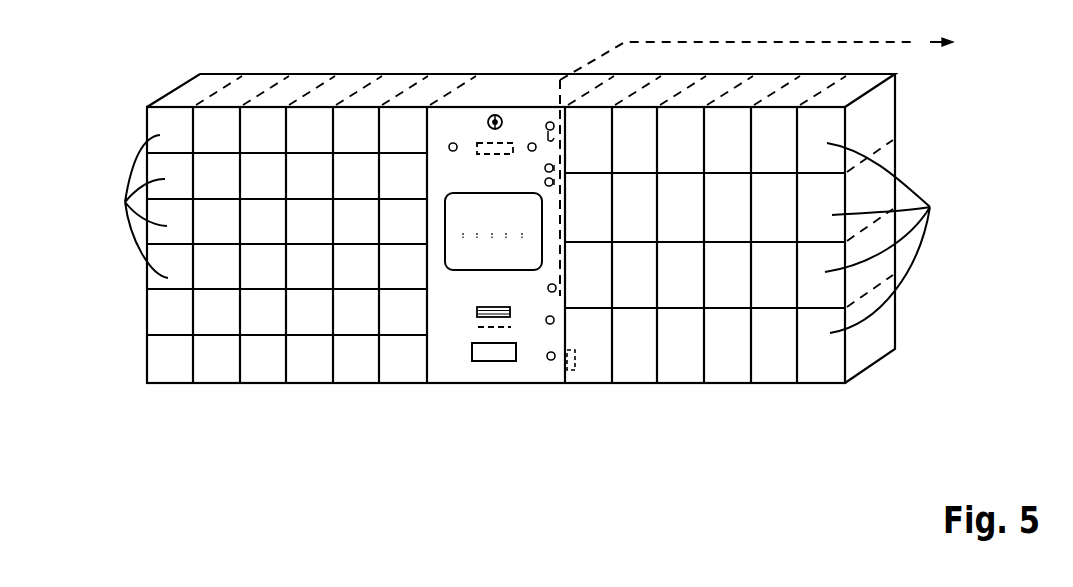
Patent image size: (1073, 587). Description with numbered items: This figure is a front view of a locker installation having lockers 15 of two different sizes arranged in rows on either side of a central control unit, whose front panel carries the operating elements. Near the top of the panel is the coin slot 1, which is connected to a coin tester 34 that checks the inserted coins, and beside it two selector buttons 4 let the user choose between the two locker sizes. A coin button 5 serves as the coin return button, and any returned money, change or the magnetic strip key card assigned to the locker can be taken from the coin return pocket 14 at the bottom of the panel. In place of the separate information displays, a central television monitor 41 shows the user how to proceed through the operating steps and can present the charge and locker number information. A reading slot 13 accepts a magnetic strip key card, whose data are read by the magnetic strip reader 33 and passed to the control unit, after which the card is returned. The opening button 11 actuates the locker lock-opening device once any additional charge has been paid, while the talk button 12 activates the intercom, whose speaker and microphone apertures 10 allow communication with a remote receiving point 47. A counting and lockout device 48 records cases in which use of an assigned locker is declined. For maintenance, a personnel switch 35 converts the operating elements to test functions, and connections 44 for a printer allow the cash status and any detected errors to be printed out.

The coin slot 1 is at (496, 114).
The selector buttons 4 is at (532, 143).
The coin button 5 is at (551, 120).
The intercom speaker and microphone apertures 10 is at (545, 182).
The opening button 11 is at (548, 325).
The talk button 12 is at (548, 288).
The reading slot 13 is at (499, 307).
The coin return pocket 14 is at (479, 352).
The locker 15 is at (529, 234).
The magnetic strip reader 33 is at (478, 325).
The coin tester 34 is at (487, 143).
The personnel switch 35 is at (571, 359).
The television monitor 41 is at (455, 263).
The connections for a printer 44 is at (549, 362).
The remote receiving point 47 is at (769, 57).
The counting and lockout device 48 is at (545, 128).